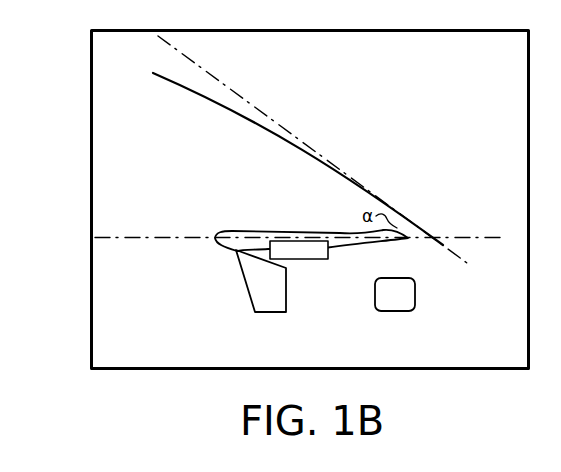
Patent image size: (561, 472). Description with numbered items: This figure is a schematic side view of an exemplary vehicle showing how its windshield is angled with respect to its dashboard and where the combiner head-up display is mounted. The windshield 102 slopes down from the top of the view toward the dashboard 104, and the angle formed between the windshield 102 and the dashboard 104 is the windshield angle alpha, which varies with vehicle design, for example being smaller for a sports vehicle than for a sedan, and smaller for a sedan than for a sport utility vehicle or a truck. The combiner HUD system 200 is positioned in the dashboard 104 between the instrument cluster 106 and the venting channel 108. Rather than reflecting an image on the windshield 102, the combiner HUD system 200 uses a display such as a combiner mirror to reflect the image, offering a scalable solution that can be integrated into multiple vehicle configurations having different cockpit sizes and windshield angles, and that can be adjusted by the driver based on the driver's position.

The windshield 102 is at (312, 150).
The dashboard 104 is at (242, 232).
The instrument cluster 106 is at (248, 290).
The venting channel 108 is at (395, 312).
The combiner head-up display (HUD) system 200 is at (320, 259).